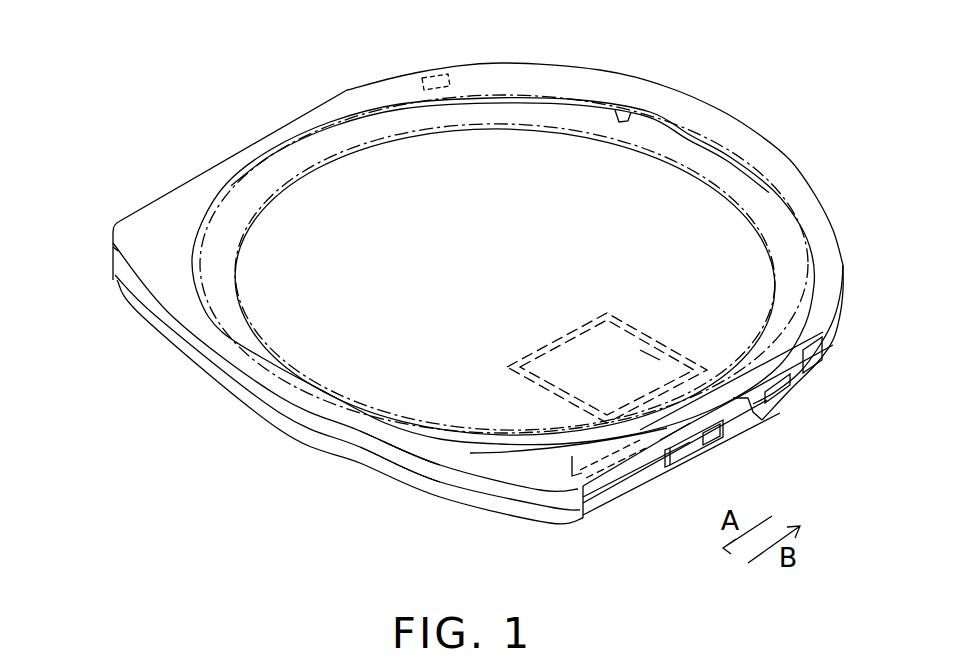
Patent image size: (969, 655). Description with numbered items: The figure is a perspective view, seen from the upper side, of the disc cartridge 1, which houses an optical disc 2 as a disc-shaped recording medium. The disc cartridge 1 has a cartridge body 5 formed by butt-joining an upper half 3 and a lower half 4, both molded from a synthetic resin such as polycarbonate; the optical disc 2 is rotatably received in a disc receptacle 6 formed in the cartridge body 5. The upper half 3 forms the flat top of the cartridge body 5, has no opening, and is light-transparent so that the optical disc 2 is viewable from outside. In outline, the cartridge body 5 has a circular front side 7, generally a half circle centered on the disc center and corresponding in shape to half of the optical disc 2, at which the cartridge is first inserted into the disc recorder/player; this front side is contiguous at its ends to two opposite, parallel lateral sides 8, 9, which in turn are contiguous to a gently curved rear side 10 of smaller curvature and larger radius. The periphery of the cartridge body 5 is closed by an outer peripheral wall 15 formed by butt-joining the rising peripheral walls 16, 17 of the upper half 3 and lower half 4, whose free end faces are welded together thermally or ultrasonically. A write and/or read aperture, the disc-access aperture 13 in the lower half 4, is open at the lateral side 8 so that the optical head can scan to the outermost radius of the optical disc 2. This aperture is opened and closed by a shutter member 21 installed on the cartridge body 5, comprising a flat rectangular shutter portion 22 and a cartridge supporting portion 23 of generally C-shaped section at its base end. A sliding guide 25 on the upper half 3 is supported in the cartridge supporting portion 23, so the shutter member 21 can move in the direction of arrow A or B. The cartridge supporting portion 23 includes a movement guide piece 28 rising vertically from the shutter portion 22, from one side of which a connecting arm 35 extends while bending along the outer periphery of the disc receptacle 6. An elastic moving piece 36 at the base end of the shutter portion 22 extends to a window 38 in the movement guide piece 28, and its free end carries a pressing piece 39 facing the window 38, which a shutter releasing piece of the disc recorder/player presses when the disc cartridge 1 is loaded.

The disc cartridge 1 is at (347, 90).
The optical disc 2 is at (480, 148).
The upper half 3 is at (113, 250).
The lower half 4 is at (116, 283).
The cartridge body 5 is at (56, 262).
The disc receptacle 6 is at (622, 112).
The circular front side 7 is at (680, 96).
The lateral side 8 is at (604, 500).
The lateral side 9 is at (172, 186).
The rear side 10 is at (240, 382).
The disc-access aperture 13 is at (657, 362).
The outer peripheral wall 15 is at (311, 497).
The rising peripheral wall 16 is at (380, 451).
The rising peripheral wall 17 is at (391, 471).
The shutter member 21 is at (760, 426).
The shutter portion 22 is at (605, 355).
The cartridge supporting portion 23 is at (690, 447).
The sliding guide 25 is at (622, 484).
The movement guide piece 28 is at (748, 420).
The connecting arm 35 is at (575, 478).
The elastic moving piece 36 is at (493, 453).
The window 38 is at (703, 457).
The pressing piece 39 is at (708, 428).